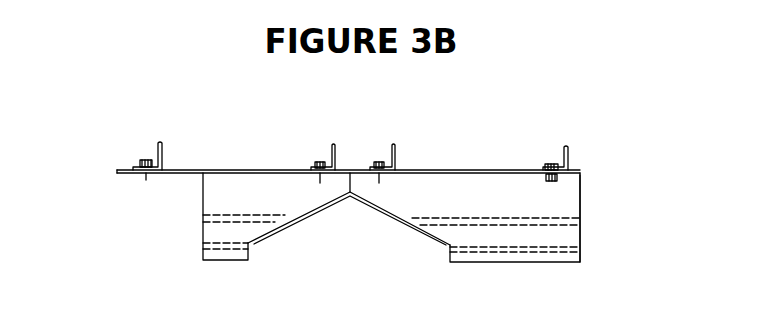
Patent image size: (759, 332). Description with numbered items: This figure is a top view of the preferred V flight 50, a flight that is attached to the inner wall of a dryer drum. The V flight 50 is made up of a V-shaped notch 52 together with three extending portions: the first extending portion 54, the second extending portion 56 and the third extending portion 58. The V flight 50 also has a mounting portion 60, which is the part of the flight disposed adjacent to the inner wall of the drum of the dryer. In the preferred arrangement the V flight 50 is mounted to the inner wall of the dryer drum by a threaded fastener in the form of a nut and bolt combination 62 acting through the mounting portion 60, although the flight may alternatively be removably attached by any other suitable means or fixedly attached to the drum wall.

The V flight 50 is at (192, 215).
The V-shaped notch 52 is at (347, 232).
The first extending portion 54 is at (583, 198).
The second extending portion 56 is at (582, 235).
The third extending portion 58 is at (580, 253).
The mounting portion 60 is at (192, 170).
The nut and bolt combination 62 is at (548, 165).